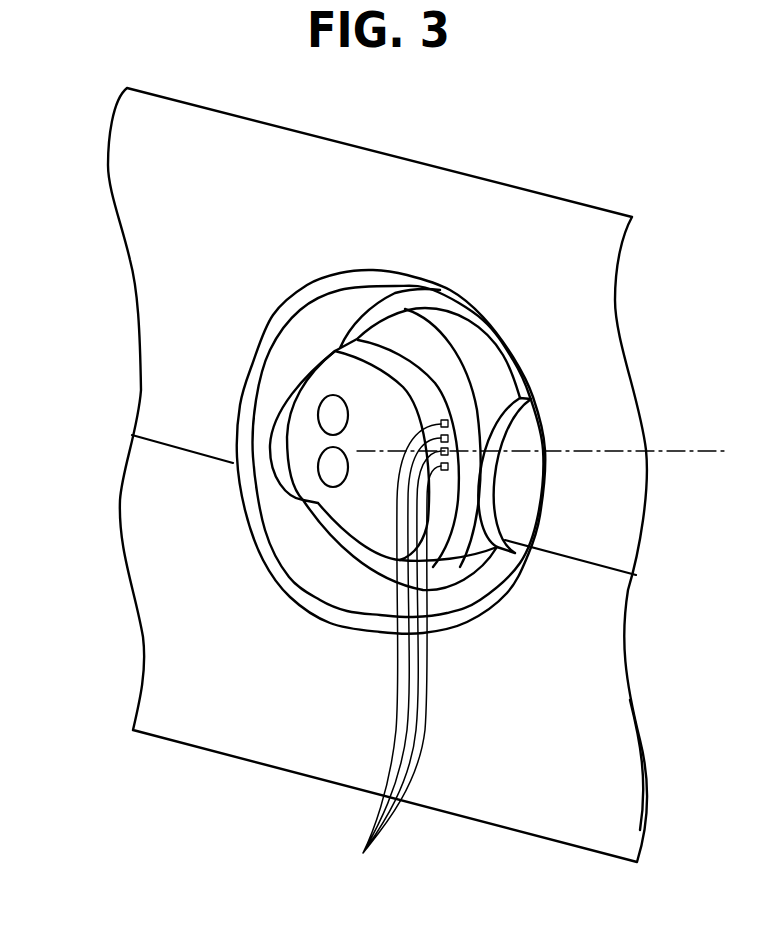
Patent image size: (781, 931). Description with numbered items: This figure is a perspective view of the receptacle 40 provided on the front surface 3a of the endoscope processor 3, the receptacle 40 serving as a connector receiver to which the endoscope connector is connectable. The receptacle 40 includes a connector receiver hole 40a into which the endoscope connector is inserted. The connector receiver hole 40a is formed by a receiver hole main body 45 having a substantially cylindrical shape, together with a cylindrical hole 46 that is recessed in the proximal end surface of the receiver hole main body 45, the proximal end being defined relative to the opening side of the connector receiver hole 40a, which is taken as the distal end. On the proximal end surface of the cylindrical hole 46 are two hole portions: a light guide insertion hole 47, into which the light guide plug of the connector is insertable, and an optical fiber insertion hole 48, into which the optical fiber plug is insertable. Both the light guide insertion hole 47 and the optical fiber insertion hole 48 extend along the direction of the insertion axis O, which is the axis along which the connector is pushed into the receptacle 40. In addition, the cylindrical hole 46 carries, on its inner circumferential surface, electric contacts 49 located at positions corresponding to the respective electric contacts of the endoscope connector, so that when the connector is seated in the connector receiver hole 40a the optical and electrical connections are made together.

The endoscope processor 3 is at (668, 179).
The front surface 3a is at (614, 787).
The insertion axis O is at (552, 451).
The receptacle 40 is at (544, 482).
The connector receiver hole 40a is at (486, 500).
The receiver hole main body 45 is at (489, 406).
The cylindrical hole 46 is at (432, 397).
The light guide insertion hole 47 is at (322, 468).
The optical fiber insertion hole 48 is at (318, 417).
The electric contacts 49 is at (398, 656).